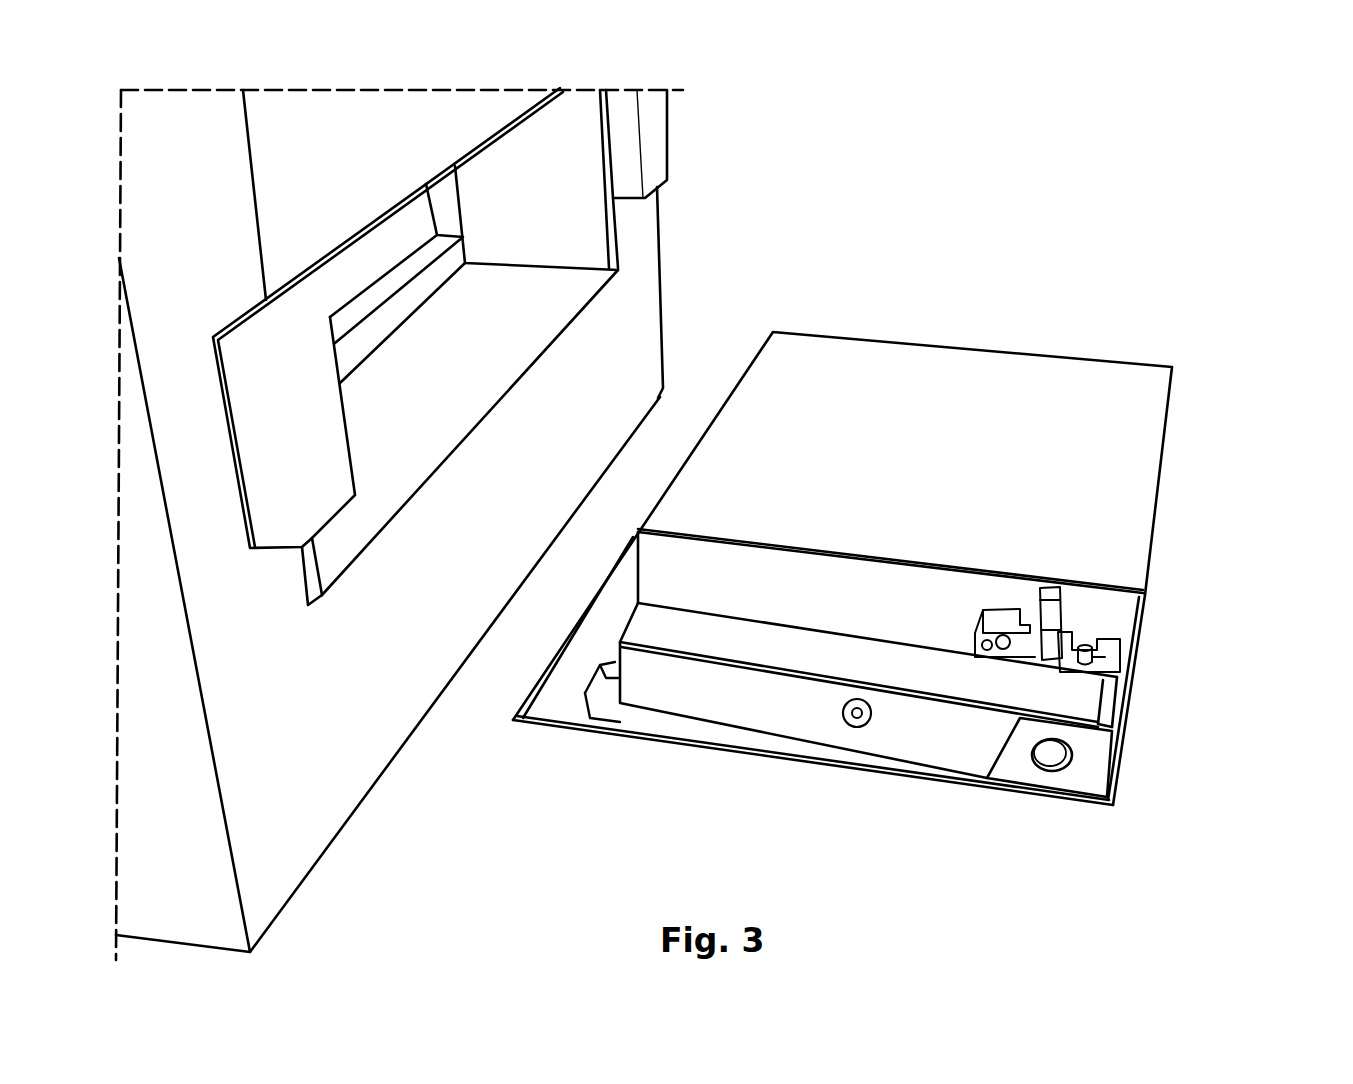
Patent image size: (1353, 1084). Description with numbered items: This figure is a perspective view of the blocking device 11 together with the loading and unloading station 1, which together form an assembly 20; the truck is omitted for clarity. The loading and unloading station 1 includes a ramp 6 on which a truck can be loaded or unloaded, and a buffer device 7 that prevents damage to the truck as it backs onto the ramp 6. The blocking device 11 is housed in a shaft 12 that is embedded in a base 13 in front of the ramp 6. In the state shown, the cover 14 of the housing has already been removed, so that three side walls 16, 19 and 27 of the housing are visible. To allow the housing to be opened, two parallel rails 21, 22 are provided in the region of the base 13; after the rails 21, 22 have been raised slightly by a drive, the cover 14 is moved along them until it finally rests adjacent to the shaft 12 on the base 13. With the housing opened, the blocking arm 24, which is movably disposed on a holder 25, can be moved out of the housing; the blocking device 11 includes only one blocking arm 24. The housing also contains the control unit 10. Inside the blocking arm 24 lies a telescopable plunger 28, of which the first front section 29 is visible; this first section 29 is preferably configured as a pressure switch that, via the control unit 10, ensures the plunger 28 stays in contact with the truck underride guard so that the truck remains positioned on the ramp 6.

The loading and unloading station 1 is at (318, 757).
The ramp 6 is at (395, 137).
The buffer device 7 is at (280, 350).
The control unit 10 is at (980, 645).
The blocking device 11 is at (1143, 634).
The shaft 12 is at (627, 533).
The base 13 is at (806, 860).
The cover 14 is at (1022, 435).
The side wall 16 is at (546, 703).
The side wall 19 is at (718, 565).
The assembly 20 is at (767, 242).
The rail 21 is at (580, 618).
The rail 22 is at (1148, 675).
The blocking arm 24 is at (868, 657).
The holder 25 is at (1085, 780).
The side wall 27 is at (943, 777).
The plunger 28 is at (597, 653).
The first front section 29 is at (612, 680).